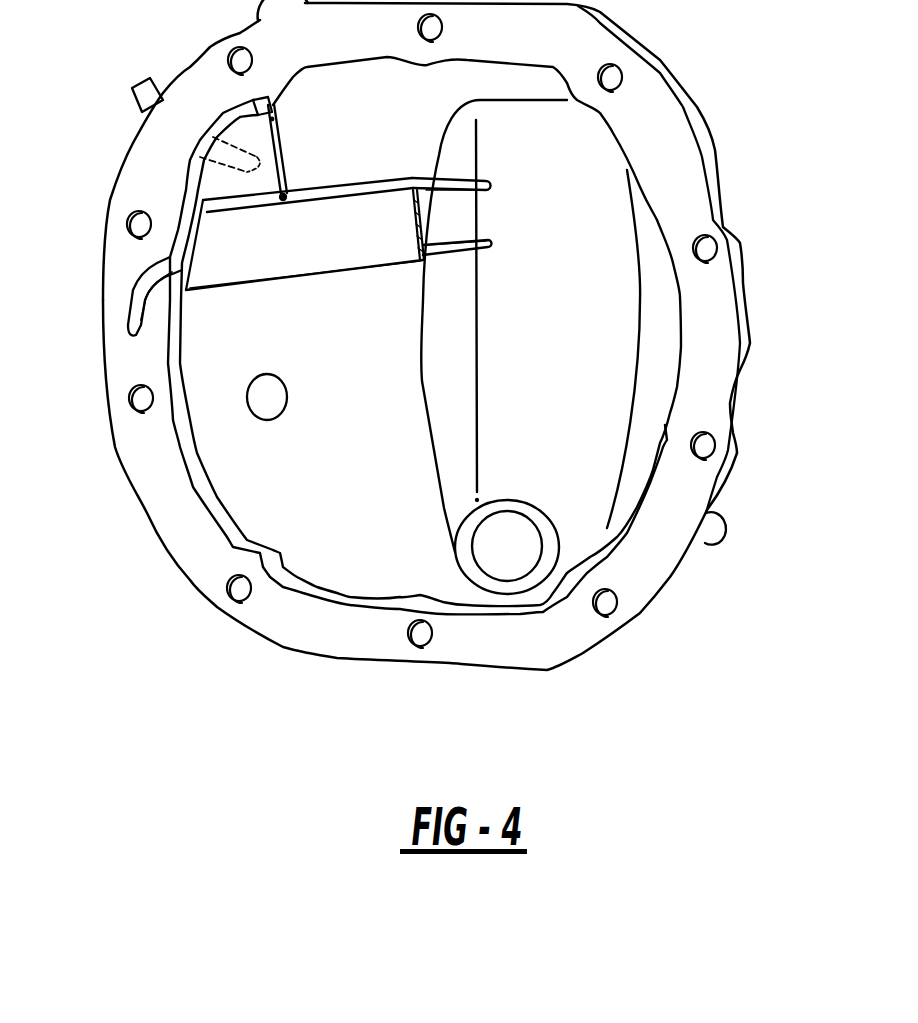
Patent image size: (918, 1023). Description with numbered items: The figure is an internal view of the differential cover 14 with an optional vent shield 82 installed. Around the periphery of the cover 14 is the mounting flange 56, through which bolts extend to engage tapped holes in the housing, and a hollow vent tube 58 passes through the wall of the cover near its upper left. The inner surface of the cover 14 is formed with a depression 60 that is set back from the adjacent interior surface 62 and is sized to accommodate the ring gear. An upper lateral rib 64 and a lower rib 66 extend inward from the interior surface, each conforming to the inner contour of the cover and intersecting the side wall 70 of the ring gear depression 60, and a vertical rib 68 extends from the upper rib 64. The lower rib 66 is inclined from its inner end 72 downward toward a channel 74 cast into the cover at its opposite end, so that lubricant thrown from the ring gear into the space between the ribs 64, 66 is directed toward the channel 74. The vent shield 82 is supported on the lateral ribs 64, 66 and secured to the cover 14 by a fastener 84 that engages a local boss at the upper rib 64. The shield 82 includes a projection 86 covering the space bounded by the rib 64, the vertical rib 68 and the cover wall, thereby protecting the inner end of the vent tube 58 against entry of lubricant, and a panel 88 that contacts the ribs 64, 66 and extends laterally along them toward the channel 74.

The cover 14 is at (740, 457).
The mounting flange 56 is at (500, 633).
The hollow vent tube 58 is at (155, 80).
The depression 60 is at (553, 318).
The interior surface 62 is at (361, 402).
The upper lateral rib 64 is at (429, 186).
The lower rib 66 is at (445, 247).
The vertical rib 68 is at (278, 125).
The side wall 70 is at (435, 375).
The inner end 72 is at (497, 241).
The channel 74 is at (128, 313).
The vent shield 82 is at (341, 276).
The fastener 84 is at (286, 192).
The projection 86 is at (217, 187).
The panel 88 is at (343, 253).